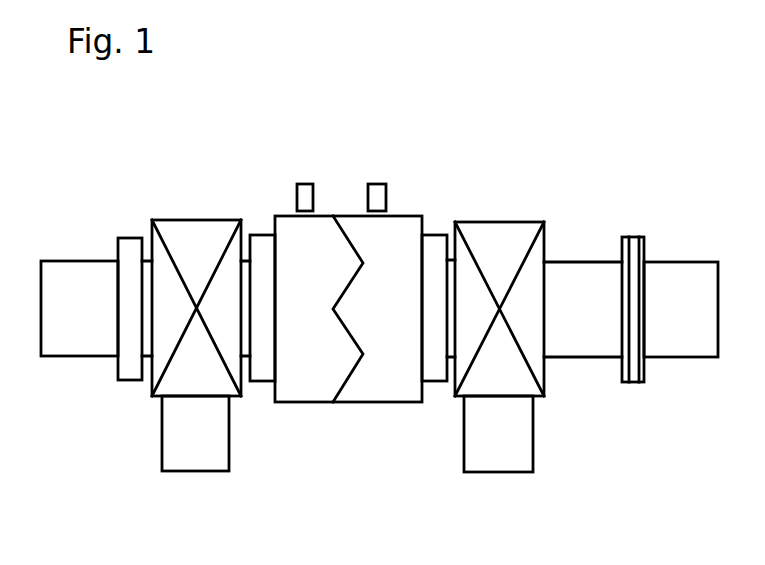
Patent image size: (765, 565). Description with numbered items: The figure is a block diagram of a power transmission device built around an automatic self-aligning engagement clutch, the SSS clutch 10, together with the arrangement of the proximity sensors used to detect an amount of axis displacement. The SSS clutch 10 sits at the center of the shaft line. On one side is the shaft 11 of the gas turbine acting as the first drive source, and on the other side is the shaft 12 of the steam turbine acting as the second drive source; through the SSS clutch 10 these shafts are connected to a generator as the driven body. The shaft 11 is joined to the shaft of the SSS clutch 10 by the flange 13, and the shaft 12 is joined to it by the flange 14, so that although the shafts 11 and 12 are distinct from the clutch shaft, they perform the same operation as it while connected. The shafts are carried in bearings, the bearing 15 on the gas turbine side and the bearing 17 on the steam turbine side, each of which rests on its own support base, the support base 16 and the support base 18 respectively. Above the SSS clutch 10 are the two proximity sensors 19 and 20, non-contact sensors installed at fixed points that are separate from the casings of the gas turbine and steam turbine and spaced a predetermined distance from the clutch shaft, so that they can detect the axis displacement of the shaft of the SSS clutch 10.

The SSS clutch 10 is at (367, 403).
The shaft 11 is at (692, 350).
The shaft 12 is at (65, 347).
The flange 13 is at (634, 383).
The flange 14 is at (127, 382).
The bearing 15 is at (510, 232).
The support base 16 is at (501, 450).
The bearing 17 is at (196, 232).
The support base 18 is at (198, 451).
The proximity sensor 19 is at (377, 184).
The proximity sensor 20 is at (307, 184).